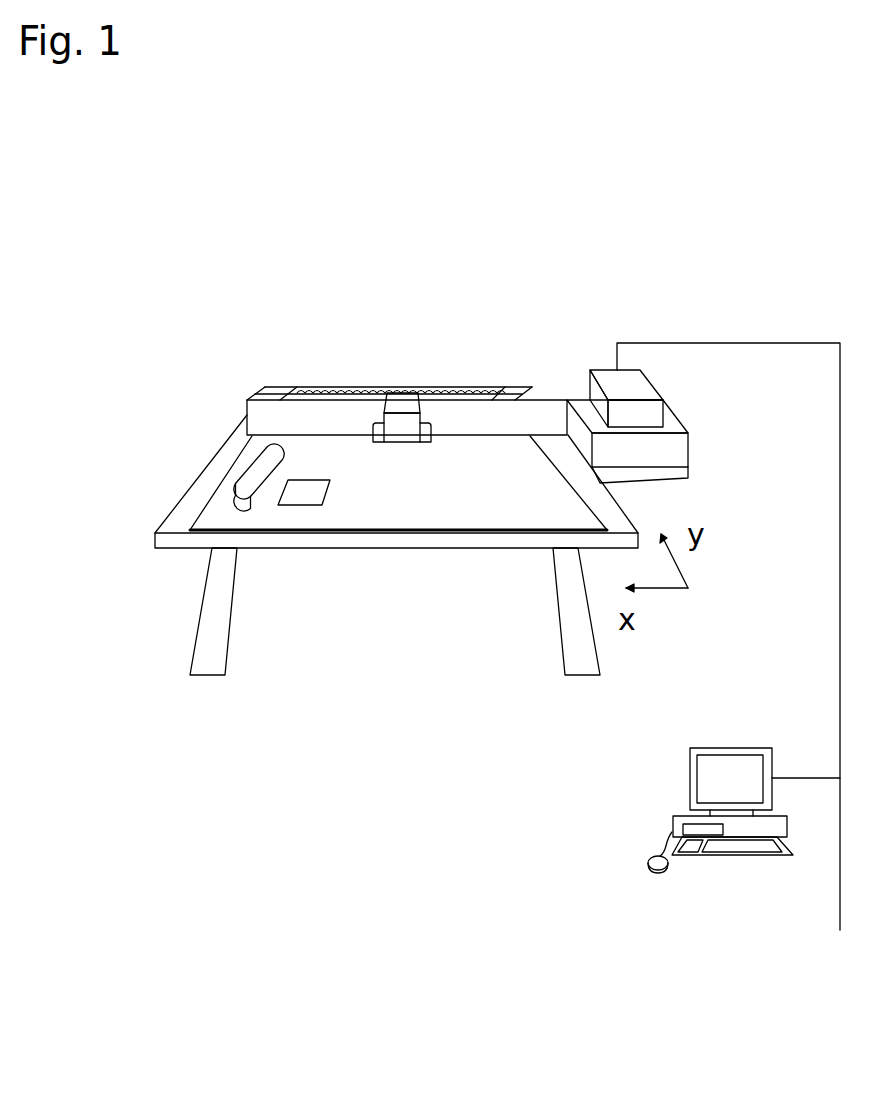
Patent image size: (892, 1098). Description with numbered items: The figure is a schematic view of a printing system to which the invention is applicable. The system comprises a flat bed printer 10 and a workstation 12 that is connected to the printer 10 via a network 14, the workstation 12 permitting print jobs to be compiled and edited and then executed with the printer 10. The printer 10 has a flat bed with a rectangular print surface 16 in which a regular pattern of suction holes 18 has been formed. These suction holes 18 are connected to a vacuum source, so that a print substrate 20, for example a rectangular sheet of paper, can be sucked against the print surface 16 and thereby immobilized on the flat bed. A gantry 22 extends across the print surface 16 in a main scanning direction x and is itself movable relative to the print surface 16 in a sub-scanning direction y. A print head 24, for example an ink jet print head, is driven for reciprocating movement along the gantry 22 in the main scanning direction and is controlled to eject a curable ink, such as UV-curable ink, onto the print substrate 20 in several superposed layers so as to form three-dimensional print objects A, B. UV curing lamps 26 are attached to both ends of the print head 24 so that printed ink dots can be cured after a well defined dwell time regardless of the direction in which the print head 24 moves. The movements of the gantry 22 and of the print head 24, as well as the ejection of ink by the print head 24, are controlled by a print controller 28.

The flat bed printer 10 is at (155, 429).
The workstation 12 is at (620, 812).
The network 14 is at (840, 605).
The print surface 16 is at (205, 515).
The suction holes 18 is at (302, 387).
The print substrate 20 is at (398, 518).
The gantry 22 is at (508, 422).
The print head 24 is at (403, 405).
The UV curing lamps 26 is at (378, 442).
The print controller 28 is at (668, 455).
The print object A is at (248, 485).
The print object B is at (308, 490).